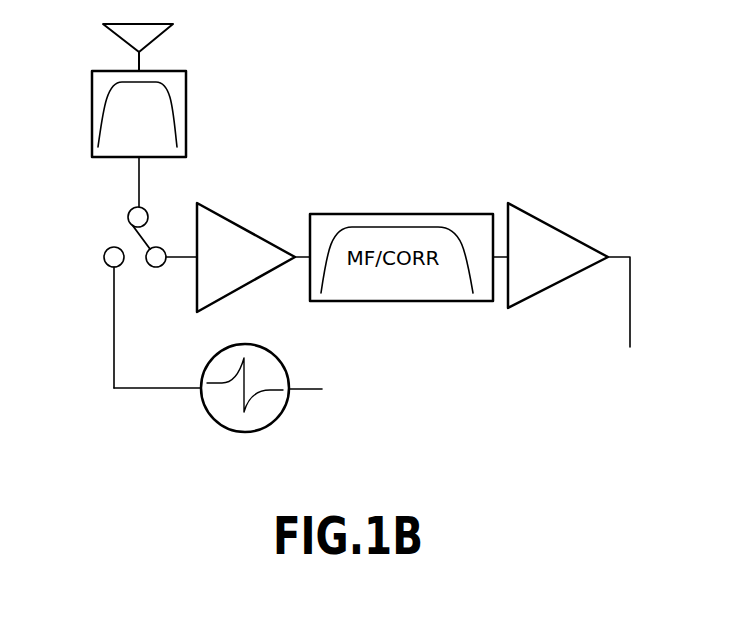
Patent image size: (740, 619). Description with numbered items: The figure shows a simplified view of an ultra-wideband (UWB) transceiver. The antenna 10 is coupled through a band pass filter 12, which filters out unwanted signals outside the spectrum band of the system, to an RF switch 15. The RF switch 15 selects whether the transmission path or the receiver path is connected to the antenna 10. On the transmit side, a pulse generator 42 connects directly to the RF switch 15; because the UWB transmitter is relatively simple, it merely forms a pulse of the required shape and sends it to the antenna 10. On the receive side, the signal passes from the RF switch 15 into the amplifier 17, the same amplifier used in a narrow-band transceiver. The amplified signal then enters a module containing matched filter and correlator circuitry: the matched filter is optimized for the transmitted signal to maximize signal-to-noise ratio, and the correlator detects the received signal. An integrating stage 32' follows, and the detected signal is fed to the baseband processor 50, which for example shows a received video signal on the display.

The antenna 10 is at (162, 32).
The band pass filter 12 is at (186, 95).
The RF switch 15 is at (127, 240).
The amplifier 17 is at (242, 226).
The integrator 32' is at (572, 275).
The pulse generator 42 is at (203, 400).
The baseband processor 50 is at (510, 420).